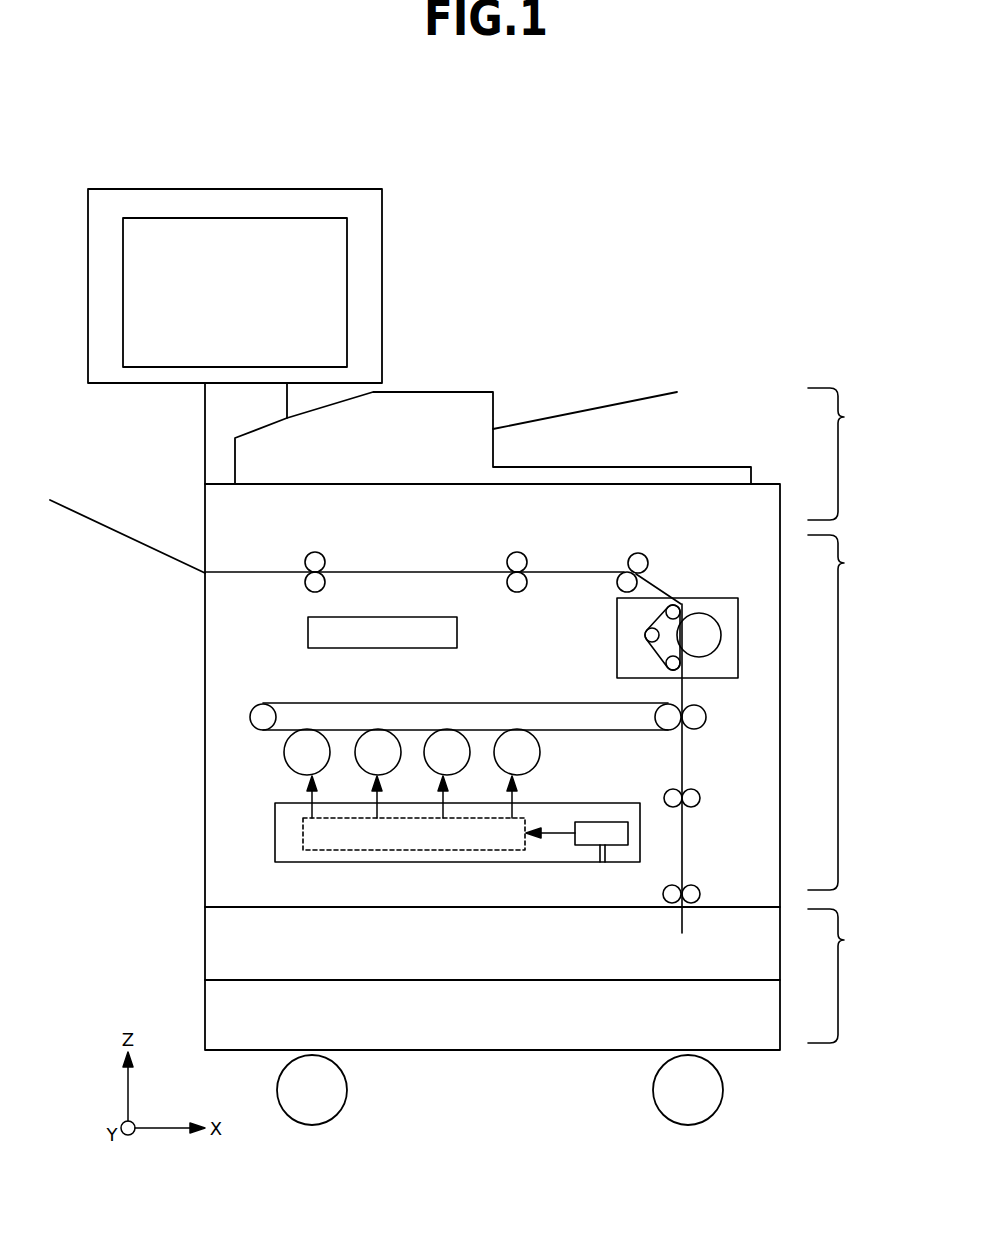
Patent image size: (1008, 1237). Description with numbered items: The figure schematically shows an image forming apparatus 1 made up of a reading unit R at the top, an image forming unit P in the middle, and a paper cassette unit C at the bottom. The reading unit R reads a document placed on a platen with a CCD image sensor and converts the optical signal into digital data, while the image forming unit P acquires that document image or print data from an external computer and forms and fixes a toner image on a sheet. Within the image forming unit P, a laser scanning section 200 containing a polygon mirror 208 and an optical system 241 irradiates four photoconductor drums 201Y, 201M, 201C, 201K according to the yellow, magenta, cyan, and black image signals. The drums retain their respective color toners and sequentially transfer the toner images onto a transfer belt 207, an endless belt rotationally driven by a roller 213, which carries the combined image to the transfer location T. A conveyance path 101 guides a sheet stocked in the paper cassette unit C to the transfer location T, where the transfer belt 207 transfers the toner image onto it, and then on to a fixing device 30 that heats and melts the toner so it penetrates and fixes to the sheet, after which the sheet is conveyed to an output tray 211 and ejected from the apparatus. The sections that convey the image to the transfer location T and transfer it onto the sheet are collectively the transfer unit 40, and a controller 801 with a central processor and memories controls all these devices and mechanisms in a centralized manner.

The image forming apparatus 1 is at (699, 194).
The output tray 211 is at (97, 513).
The controller 801 is at (318, 629).
The fixing device 30 is at (700, 598).
The conveyance path 101 is at (683, 857).
The transfer unit 40 is at (467, 695).
The transfer belt 207 is at (478, 703).
The roller 213 is at (262, 707).
The photoconductor drum 201Y is at (287, 766).
The photoconductor drum 201M is at (362, 766).
The photoconductor drum 201C is at (430, 766).
The photoconductor drum 201K is at (538, 762).
The transfer location T is at (697, 740).
The laser scanning section 200 is at (283, 840).
The optical system 241 is at (512, 851).
The polygon mirror 208 is at (593, 822).
The reading unit R is at (841, 454).
The image forming unit P is at (841, 712).
The paper cassette unit C is at (841, 976).